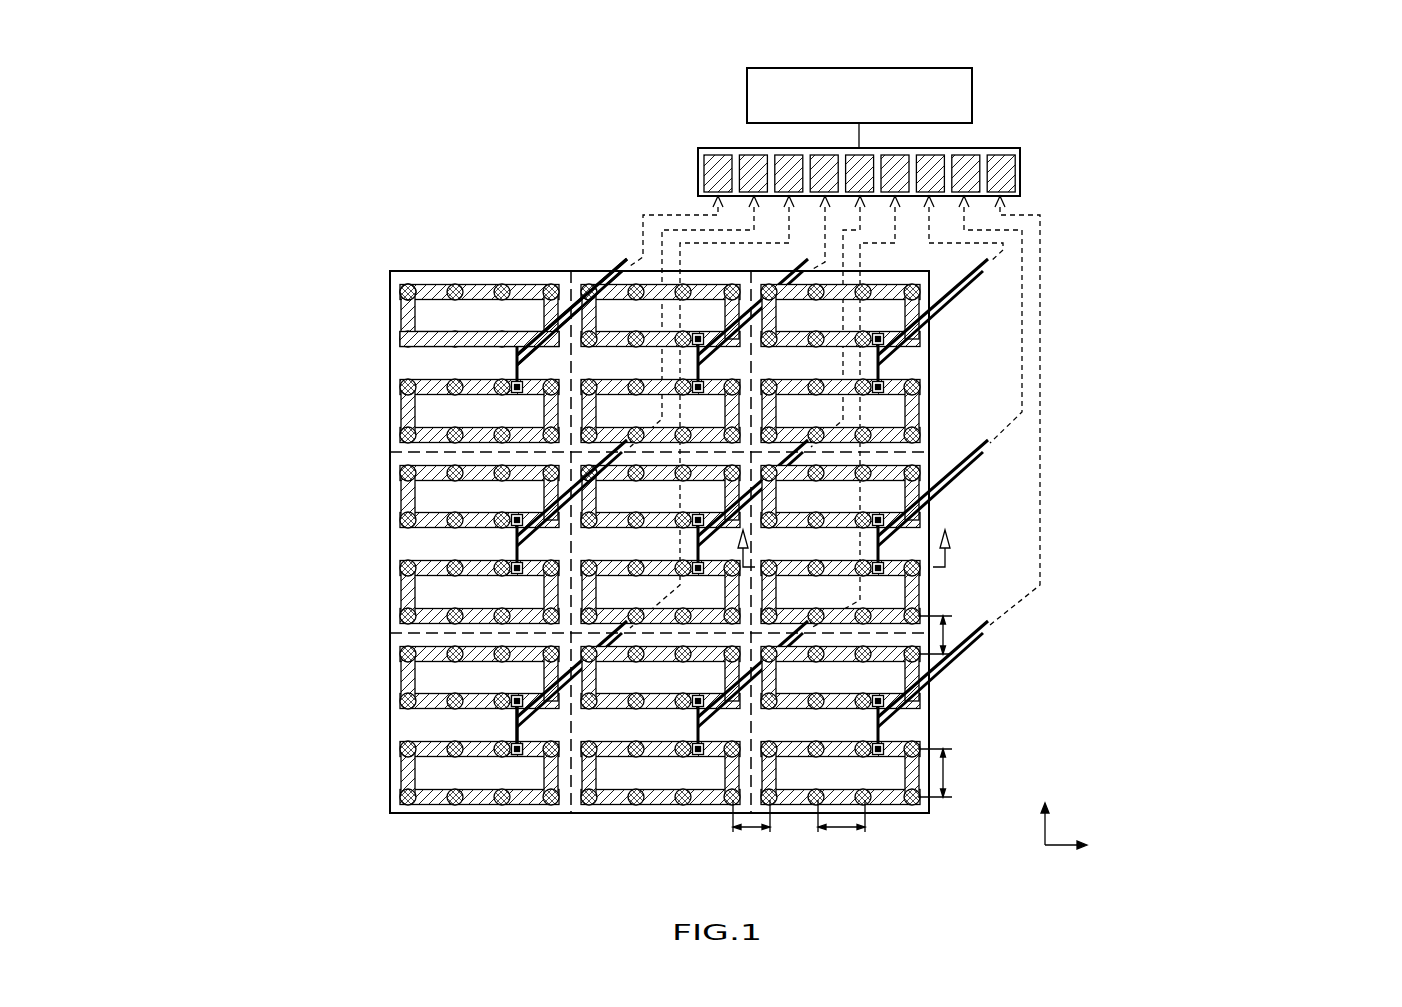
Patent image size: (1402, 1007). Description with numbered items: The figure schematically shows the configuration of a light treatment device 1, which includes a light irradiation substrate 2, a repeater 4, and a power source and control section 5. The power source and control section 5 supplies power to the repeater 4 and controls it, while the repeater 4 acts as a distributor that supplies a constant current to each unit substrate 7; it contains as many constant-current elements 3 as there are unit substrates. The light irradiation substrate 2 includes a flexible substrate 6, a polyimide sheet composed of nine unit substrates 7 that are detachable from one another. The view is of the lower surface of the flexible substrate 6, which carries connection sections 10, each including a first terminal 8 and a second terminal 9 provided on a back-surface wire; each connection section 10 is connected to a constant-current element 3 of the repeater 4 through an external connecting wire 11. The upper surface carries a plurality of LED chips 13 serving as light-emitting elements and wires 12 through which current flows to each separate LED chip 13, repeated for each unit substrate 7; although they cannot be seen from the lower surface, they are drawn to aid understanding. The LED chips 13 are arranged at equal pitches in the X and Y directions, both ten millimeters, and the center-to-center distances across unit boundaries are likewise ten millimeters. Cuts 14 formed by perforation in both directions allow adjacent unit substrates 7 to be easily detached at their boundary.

The light treatment device 1 is at (468, 106).
The light irradiation substrate 2 is at (432, 263).
The constant-current element 3 is at (1016, 172).
The repeater 4 is at (1043, 161).
The power source and control section 5 is at (973, 99).
The flexible substrate 6 is at (400, 366).
The unit substrate 7 is at (390, 454).
The first terminal 8 is at (517, 755).
The second terminal 9 is at (513, 704).
The connection section 10 is at (459, 789).
The external connecting wire 11 is at (572, 313).
The wire 12 is at (402, 318).
The LED chip 13 is at (405, 292).
The cut 14 is at (435, 637).